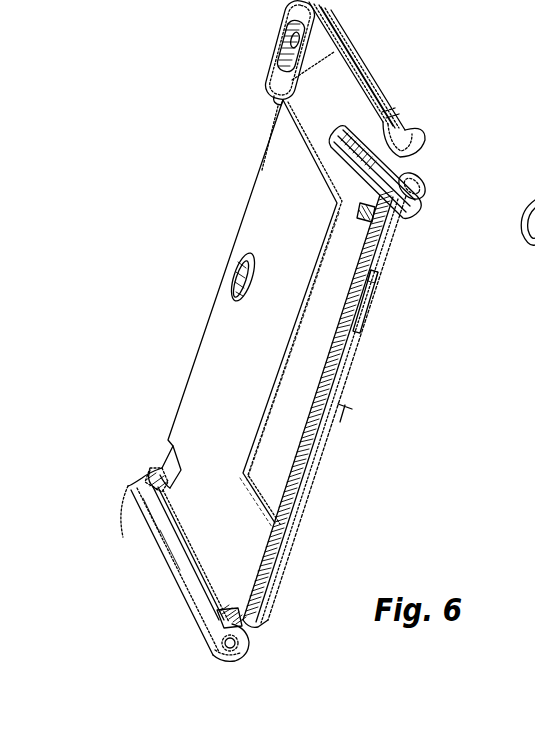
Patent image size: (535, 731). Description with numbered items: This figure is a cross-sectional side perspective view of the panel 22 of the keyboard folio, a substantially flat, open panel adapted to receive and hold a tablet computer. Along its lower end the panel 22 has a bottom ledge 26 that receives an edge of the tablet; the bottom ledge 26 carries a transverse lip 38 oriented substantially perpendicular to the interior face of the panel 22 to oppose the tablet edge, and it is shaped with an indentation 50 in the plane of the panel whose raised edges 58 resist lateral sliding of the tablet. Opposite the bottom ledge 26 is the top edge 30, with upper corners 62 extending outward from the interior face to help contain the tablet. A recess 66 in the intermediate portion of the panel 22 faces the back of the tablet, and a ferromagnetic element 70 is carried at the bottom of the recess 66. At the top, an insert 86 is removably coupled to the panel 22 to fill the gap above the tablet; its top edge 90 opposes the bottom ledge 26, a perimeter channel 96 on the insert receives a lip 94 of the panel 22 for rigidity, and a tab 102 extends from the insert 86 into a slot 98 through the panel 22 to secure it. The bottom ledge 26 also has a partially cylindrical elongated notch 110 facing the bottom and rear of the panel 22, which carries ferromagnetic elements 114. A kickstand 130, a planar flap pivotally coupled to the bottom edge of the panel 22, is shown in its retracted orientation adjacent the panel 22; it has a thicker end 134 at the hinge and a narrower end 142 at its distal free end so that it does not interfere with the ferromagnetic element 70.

The panel 22 is at (133, 512).
The bottom ledge 26 is at (183, 597).
The top edge 30 is at (336, 33).
The transverse lip 38 is at (162, 520).
The indentation 50 is at (172, 550).
The raised edges 58 is at (133, 483).
The upper corners 62 is at (296, 22).
The recess 66 is at (317, 322).
The ferromagnetic element 70 is at (370, 307).
The insert 86 is at (313, 110).
The top edge 90 is at (352, 74).
The lip 94 is at (412, 128).
The perimeter channel 96 is at (398, 118).
The slot 98 is at (393, 222).
The tab 102 is at (427, 197).
The elongated notch 110 is at (237, 653).
The ferromagnetic elements 114 is at (217, 622).
The kickstand 130 is at (303, 517).
The thicker end 134 is at (269, 622).
The narrower end 142 is at (337, 412).